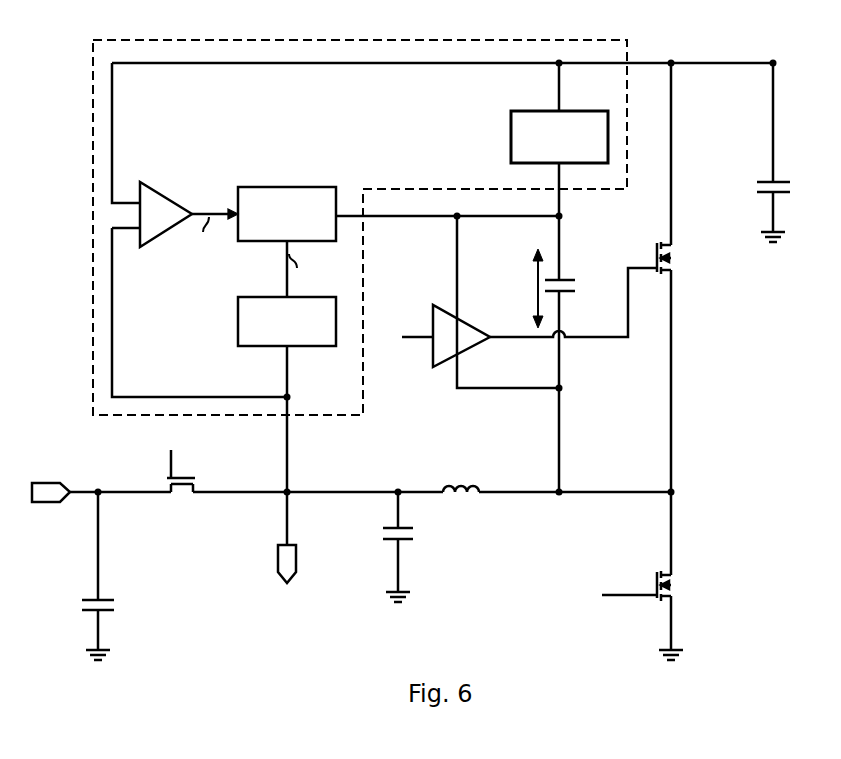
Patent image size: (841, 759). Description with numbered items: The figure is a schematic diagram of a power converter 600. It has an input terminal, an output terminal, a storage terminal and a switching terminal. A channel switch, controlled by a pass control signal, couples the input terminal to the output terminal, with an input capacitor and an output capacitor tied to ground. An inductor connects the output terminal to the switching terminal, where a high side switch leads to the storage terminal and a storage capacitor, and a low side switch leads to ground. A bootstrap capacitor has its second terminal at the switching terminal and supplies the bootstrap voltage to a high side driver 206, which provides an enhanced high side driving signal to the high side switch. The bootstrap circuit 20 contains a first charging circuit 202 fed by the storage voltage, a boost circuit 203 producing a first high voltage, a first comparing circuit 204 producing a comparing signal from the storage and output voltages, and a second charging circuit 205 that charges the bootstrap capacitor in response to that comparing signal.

The bootstrap circuit 20 is at (407, 189).
The first charging circuit 202 is at (511, 138).
The boost circuit 203 is at (238, 320).
The first comparing circuit 204 is at (165, 190).
The second charging circuit 205 is at (292, 187).
The high side driver 206 is at (446, 336).
The power converter 600 is at (746, 408).